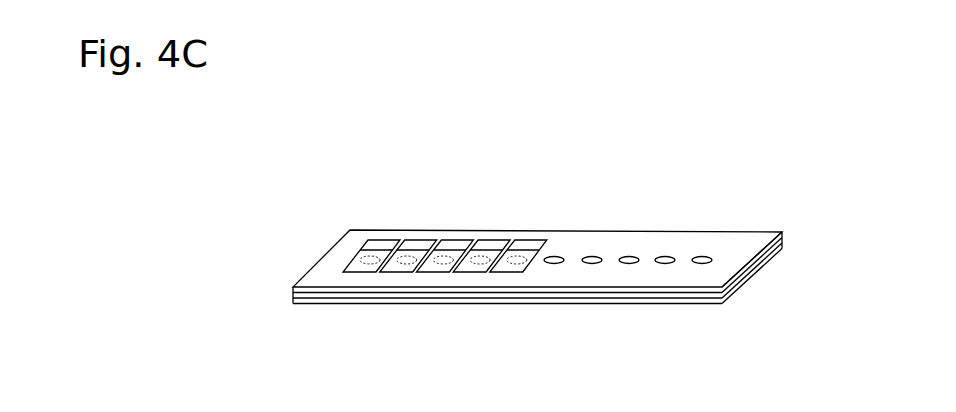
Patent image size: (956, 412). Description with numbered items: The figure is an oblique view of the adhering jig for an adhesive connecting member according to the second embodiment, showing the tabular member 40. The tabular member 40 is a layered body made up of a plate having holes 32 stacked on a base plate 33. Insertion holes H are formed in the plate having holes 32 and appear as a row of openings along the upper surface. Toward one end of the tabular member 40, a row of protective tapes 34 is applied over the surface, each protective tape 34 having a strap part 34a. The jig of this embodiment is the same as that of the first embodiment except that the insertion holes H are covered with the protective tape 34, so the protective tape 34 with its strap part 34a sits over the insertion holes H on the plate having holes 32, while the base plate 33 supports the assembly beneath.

The plate having holes 32 is at (325, 268).
The base plate 33 is at (338, 300).
The protective tape 34 is at (363, 252).
The strap part of the protective tape 34a is at (458, 241).
The insertion hole H is at (629, 256).
The tabular member of Embodiment II 40 is at (793, 233).